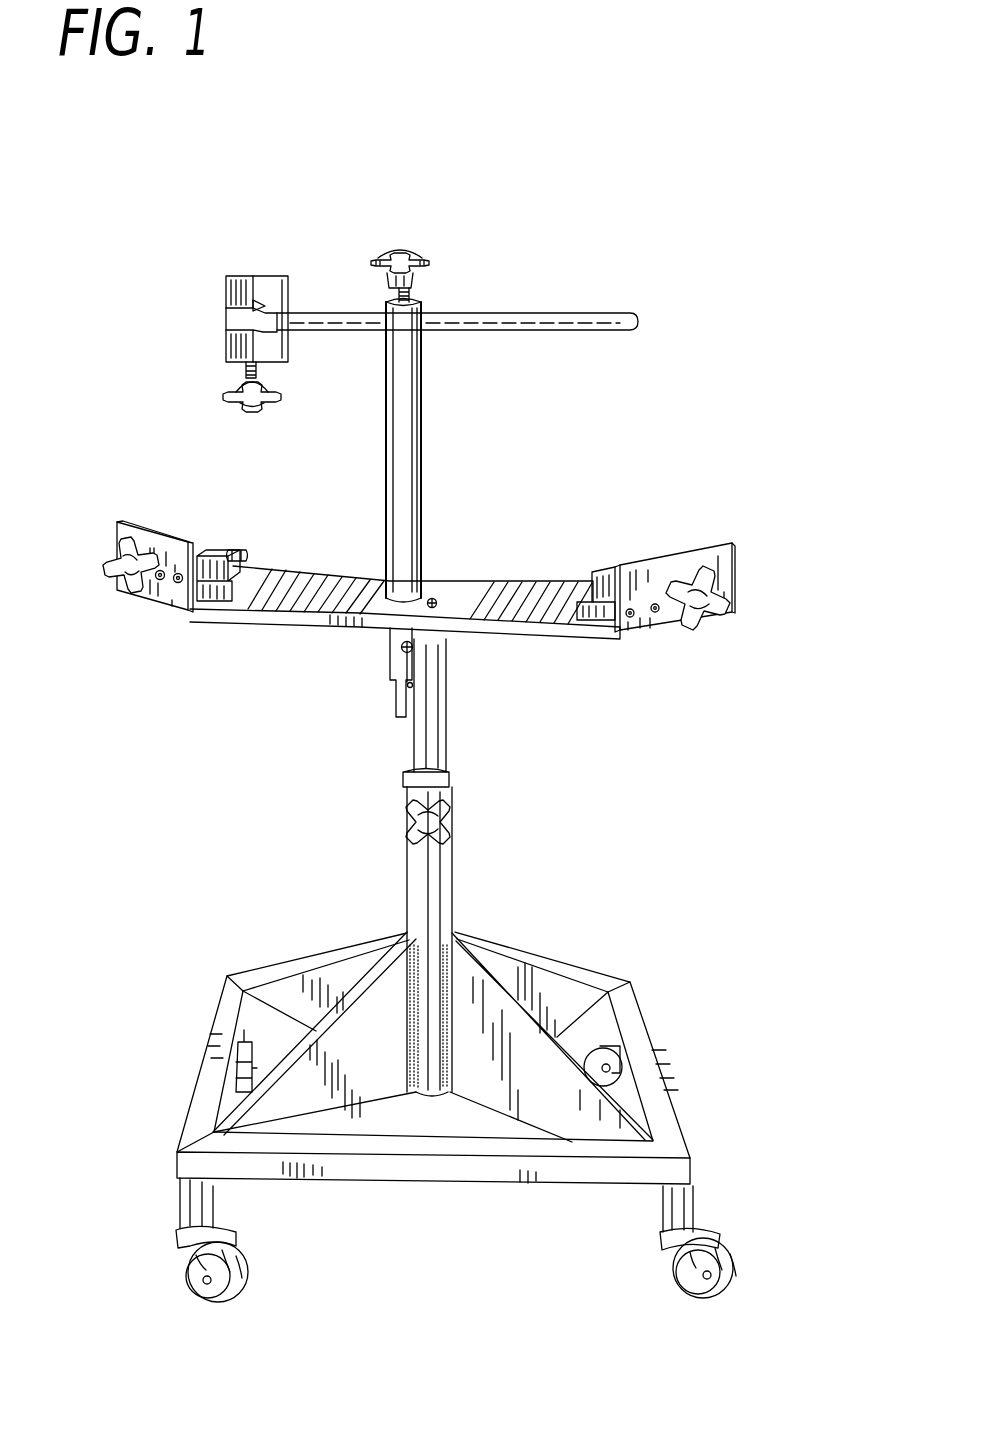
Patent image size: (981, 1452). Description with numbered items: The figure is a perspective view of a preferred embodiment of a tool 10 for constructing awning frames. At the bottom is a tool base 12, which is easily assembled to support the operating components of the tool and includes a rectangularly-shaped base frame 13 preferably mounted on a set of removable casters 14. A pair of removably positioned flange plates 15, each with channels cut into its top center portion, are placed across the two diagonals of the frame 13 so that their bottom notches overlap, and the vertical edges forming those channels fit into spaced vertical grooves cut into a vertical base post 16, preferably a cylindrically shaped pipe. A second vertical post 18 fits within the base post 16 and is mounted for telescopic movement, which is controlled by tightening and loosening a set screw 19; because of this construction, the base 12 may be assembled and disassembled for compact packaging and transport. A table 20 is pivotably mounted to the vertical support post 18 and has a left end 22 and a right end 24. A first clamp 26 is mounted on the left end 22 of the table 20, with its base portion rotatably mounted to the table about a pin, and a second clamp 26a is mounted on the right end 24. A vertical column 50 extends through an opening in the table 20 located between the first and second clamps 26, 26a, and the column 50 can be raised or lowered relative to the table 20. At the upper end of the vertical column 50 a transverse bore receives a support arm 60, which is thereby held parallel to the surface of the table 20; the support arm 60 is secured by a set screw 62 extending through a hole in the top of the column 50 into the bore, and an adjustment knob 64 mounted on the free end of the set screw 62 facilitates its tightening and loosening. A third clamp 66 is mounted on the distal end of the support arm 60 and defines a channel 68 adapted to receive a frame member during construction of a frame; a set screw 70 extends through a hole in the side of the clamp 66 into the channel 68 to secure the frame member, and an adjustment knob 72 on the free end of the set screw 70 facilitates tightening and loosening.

The tool 10 is at (660, 441).
The tool base 12 is at (648, 1023).
The base frame 13 is at (673, 1092).
The casters 14 is at (205, 1278).
The flange plates 15 is at (535, 958).
The vertical base post 16 is at (418, 887).
The second vertical post 18 is at (437, 735).
The set screw 19 is at (418, 820).
The table 20 is at (558, 630).
The left end 22 is at (280, 597).
The right end 24 is at (515, 590).
The first clamp 26 is at (233, 552).
The second clamp 26a is at (733, 575).
The vertical column 50 is at (410, 460).
The support arm 60 is at (342, 322).
The set screw 62 is at (420, 298).
The adjustment knob 64 is at (412, 252).
The third clamp 66 is at (257, 288).
The channel 68 is at (253, 305).
The set screw 70 is at (242, 367).
The adjustment knob 72 is at (242, 403).